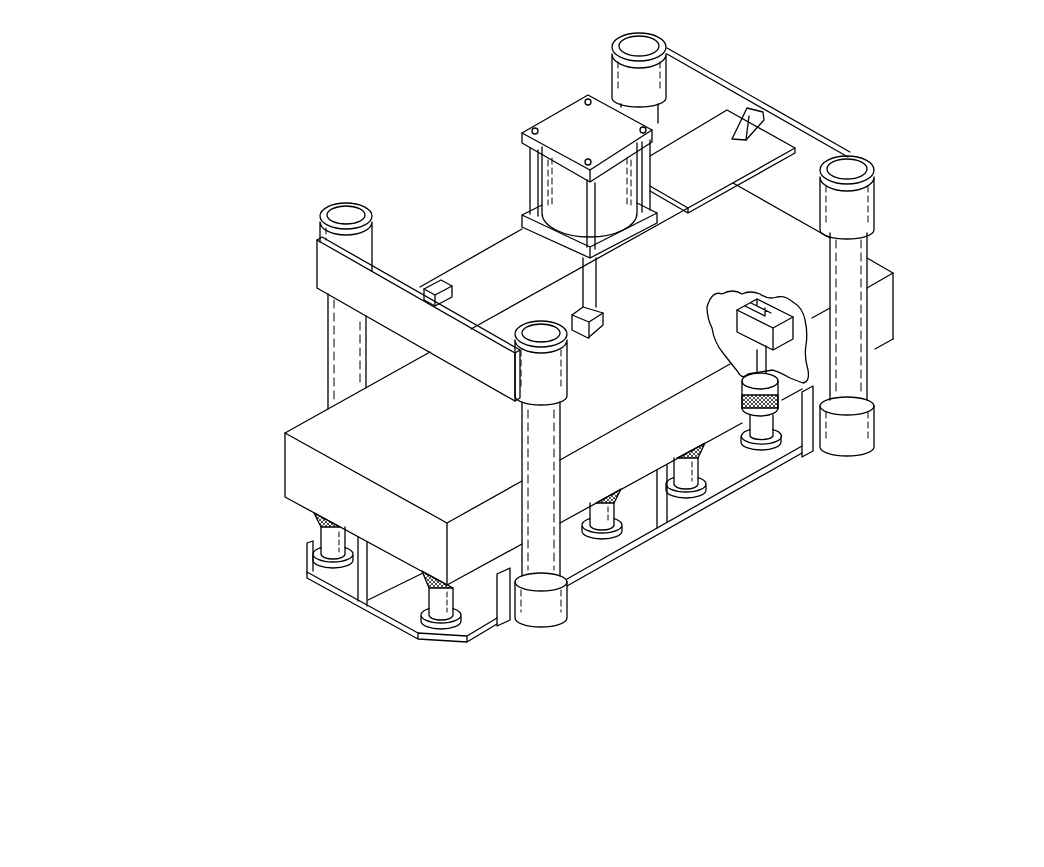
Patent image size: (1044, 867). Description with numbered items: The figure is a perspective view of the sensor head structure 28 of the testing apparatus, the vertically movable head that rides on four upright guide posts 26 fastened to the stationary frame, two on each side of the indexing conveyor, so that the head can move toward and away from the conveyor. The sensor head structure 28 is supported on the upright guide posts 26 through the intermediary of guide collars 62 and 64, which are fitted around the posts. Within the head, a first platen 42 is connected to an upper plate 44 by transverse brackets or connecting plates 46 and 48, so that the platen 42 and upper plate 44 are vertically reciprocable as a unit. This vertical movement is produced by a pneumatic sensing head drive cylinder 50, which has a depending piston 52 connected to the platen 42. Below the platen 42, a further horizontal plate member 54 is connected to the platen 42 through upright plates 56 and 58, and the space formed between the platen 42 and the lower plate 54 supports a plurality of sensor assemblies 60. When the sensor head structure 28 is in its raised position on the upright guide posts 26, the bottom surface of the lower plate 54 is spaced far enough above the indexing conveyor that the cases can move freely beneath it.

The upright guide posts 26 is at (731, 90).
The sensor head structure 28 is at (858, 138).
The first platen 42 is at (895, 299).
The upper plate 44 is at (436, 271).
The transverse bracket 46 is at (764, 103).
The transverse bracket 48 is at (317, 265).
The pneumatic sensing head drive cylinder 50 is at (544, 176).
The depending piston 52 is at (598, 284).
The horizontal plate member 54 is at (397, 629).
The upright plate 56 is at (333, 587).
The upright plate 58 is at (667, 486).
The sensor assemblies 60 is at (774, 413).
The guide collar 62 is at (568, 377).
The guide collar 64 is at (876, 444).